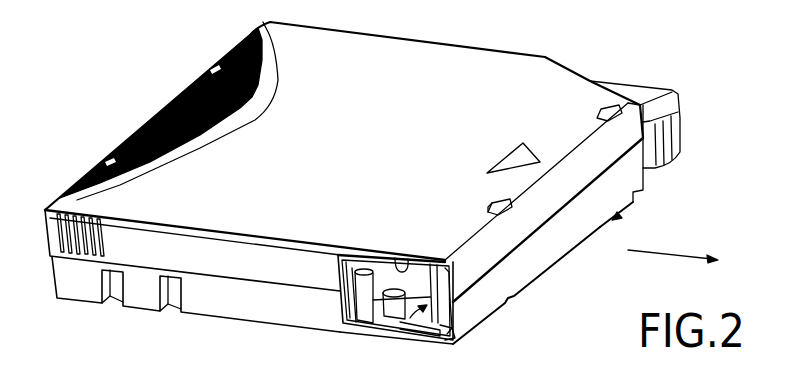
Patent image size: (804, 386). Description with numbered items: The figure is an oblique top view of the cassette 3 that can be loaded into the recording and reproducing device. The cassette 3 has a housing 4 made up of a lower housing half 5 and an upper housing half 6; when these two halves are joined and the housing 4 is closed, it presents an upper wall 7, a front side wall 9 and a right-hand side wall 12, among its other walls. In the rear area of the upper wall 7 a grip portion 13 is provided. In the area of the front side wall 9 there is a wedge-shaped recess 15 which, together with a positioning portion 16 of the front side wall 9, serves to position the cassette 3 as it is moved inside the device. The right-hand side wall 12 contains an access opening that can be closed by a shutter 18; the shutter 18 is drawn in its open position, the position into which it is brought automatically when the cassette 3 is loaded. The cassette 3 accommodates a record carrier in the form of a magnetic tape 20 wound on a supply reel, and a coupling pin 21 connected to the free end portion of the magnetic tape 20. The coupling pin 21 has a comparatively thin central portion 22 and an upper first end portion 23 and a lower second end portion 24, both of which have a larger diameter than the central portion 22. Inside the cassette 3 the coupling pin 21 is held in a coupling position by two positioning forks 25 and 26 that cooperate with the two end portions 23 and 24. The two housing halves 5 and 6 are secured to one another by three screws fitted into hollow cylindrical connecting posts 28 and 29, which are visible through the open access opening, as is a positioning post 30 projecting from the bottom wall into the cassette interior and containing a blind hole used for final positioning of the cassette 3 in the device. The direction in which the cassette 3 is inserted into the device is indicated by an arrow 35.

The cassette 3 is at (673, 66).
The housing 4 is at (680, 117).
The lower housing half 5 is at (93, 300).
The upper housing half 6 is at (520, 52).
The upper wall 7 is at (450, 58).
The front side wall 9 is at (600, 224).
The right-hand side wall 12 is at (258, 290).
The grip portion 13 is at (95, 167).
The wedge-shaped recess 15 is at (650, 180).
The positioning portion 16 is at (513, 273).
The shutter 18 is at (338, 254).
The magnetic tape 20 is at (452, 298).
The coupling pin 21 is at (415, 322).
The central portion 22 is at (452, 280).
The upper first end portion 23 is at (412, 255).
The lower second end portion 24 is at (423, 336).
The positioning fork 25 is at (402, 262).
The positioning fork 26 is at (455, 315).
The hollow cylindrical connecting post 28 is at (368, 307).
The hollow cylindrical connecting post 29 is at (360, 268).
The positioning post 30 is at (393, 292).
The arrow 35 is at (660, 257).